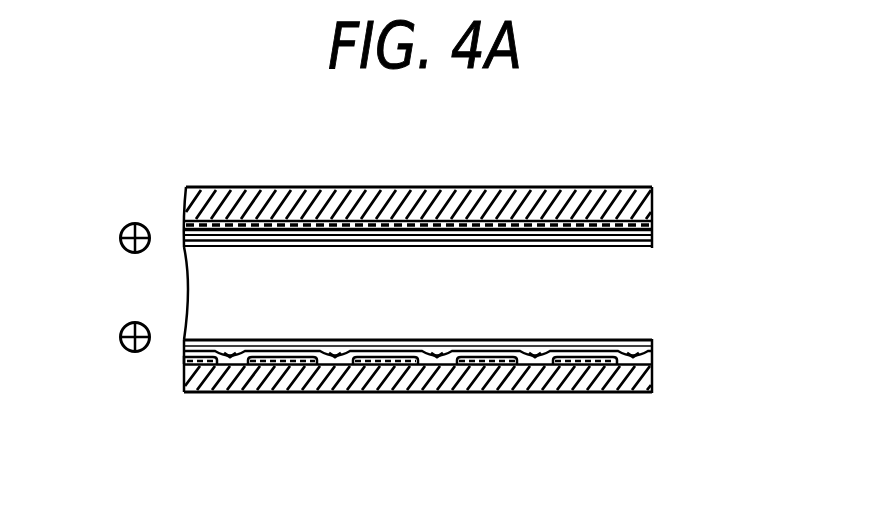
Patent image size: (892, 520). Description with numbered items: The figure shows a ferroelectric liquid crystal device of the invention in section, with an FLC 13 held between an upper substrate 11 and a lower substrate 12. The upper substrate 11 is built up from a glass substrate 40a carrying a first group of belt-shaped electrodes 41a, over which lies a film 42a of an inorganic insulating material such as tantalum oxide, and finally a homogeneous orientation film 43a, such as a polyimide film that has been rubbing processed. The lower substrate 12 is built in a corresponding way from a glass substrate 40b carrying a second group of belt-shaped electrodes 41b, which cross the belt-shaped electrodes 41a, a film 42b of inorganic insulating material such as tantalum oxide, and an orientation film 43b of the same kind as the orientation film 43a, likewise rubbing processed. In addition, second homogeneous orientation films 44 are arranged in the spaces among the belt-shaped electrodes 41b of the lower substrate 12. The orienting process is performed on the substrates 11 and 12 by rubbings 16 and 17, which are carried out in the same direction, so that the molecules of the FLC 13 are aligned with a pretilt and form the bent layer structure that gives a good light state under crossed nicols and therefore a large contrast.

The substrate 11 is at (775, 103).
The substrate 12 is at (775, 280).
The FLC 13 is at (375, 302).
The rubbing 16 is at (123, 229).
The rubbing 17 is at (123, 327).
The glass substrate 40a is at (627, 187).
The first group of belt-shaped electrodes 41a is at (652, 217).
The film of inorganic insulating material 42a is at (652, 225).
The homogeneous orientation film 43a is at (652, 238).
The second homogeneous orientation films 44 is at (545, 344).
The orientation film 43b is at (652, 338).
The film of inorganic insulating material 42b is at (652, 355).
The glass substrate 40b is at (652, 375).
The second group of belt-shaped electrodes 41b is at (597, 365).